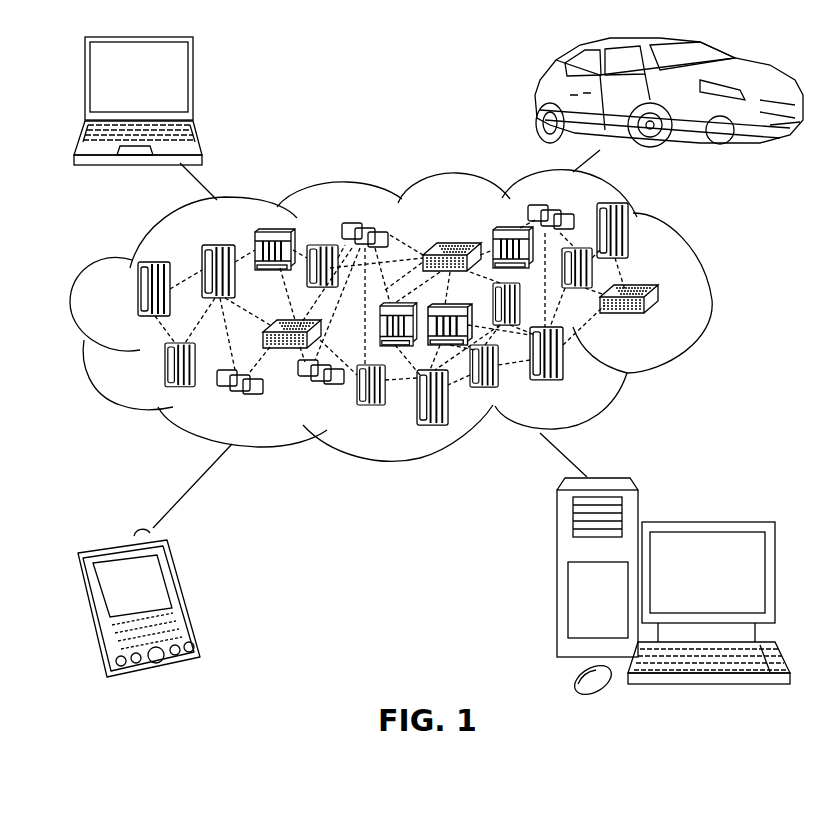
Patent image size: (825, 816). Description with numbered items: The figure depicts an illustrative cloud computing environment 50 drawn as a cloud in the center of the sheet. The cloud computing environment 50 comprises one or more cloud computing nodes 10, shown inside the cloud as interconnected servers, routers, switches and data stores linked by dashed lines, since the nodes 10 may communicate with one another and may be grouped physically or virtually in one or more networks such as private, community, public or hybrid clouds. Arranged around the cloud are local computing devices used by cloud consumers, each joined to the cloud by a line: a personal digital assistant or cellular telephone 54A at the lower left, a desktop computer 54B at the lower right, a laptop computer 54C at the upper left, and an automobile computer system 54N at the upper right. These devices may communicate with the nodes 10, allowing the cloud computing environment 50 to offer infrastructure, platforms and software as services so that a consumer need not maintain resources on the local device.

The cloud computing nodes 10 is at (666, 323).
The cloud computing environment 50 is at (705, 296).
The personal digital assistant (PDA) or cellular telephone 54A is at (183, 595).
The desktop computer 54B is at (705, 521).
The laptop computer 54C is at (195, 85).
The automobile computer system 54N is at (533, 97).